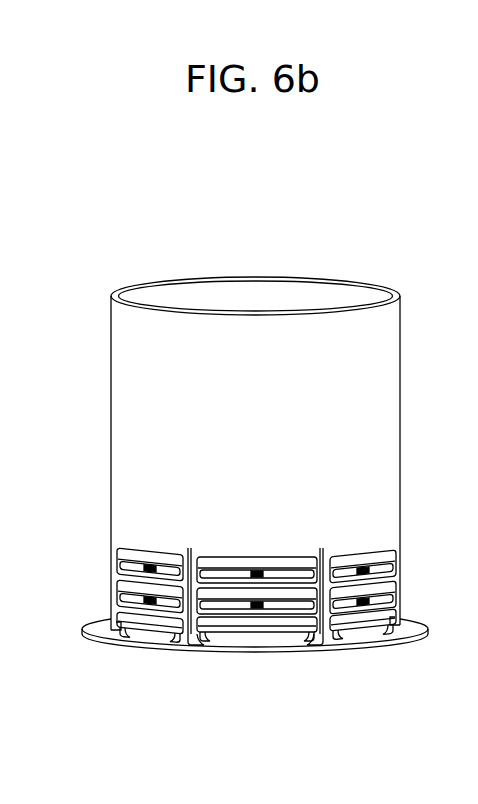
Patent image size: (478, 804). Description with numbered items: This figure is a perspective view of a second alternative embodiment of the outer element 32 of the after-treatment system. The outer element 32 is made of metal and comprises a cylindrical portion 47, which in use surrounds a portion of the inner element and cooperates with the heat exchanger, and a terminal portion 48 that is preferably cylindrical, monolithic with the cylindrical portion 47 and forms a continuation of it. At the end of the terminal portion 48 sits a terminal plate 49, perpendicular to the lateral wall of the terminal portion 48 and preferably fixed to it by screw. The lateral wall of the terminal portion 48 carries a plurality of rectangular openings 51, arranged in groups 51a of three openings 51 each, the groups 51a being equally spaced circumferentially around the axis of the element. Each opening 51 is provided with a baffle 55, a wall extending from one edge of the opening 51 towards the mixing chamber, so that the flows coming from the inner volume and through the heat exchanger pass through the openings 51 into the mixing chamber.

The outer element 32 is at (342, 238).
The cylindrical portion 47 is at (150, 342).
The terminal portion 48 is at (415, 585).
The terminal plate 49 is at (193, 653).
The opening 51 is at (361, 632).
The group of openings 51a is at (343, 555).
The baffle 55 is at (136, 556).